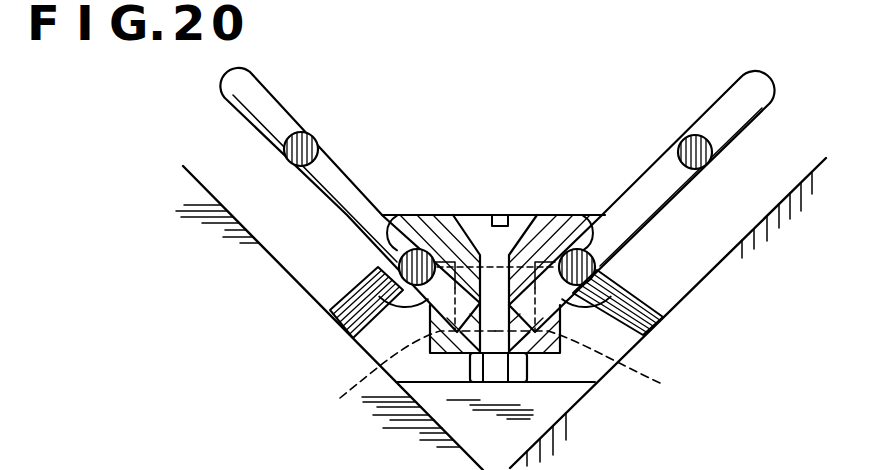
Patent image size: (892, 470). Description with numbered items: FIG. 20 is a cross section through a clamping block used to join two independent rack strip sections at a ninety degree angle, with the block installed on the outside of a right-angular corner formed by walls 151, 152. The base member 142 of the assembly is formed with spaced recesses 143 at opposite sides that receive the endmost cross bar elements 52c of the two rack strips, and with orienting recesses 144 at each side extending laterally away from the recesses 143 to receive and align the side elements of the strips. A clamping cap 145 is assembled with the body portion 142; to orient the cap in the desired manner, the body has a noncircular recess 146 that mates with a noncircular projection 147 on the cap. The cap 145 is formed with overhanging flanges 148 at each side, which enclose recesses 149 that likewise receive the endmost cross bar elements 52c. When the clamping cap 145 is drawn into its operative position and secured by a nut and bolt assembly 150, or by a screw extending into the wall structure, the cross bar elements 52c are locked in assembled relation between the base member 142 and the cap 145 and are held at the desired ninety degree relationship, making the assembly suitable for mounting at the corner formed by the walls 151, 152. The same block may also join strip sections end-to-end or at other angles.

The endmost cross bar elements 52c is at (385, 213).
The base member 142 is at (575, 370).
The recesses 143 is at (398, 262).
The orienting recesses 144 is at (383, 340).
The clamping cap 145 is at (432, 206).
The noncircular recess 146 is at (611, 365).
The noncircular projection 147 is at (393, 377).
The overhanging flanges 148 is at (378, 224).
The recesses 149 is at (619, 240).
The nut and bolt assembly 150 is at (527, 214).
The wall 151 is at (187, 182).
The wall 152 is at (790, 194).